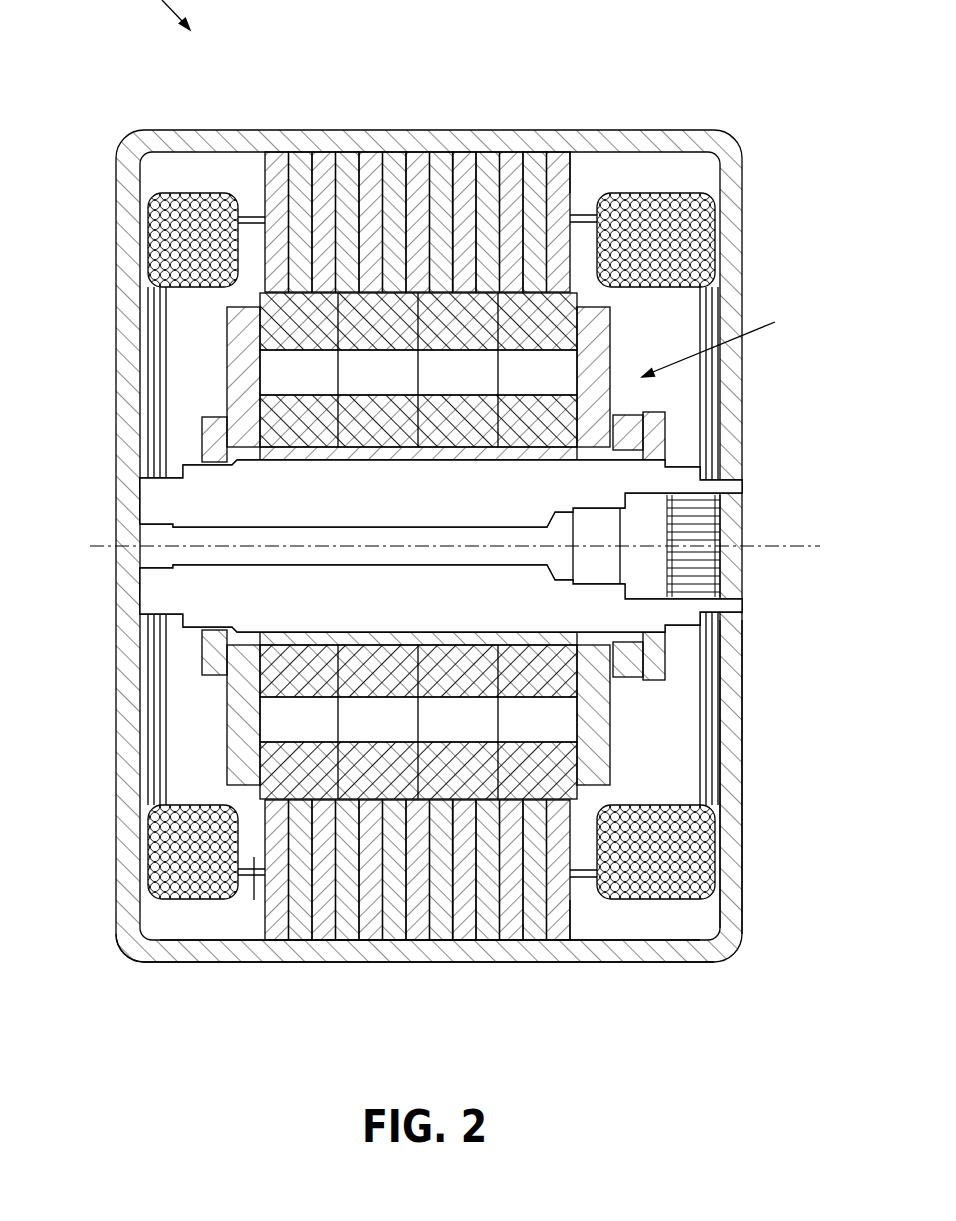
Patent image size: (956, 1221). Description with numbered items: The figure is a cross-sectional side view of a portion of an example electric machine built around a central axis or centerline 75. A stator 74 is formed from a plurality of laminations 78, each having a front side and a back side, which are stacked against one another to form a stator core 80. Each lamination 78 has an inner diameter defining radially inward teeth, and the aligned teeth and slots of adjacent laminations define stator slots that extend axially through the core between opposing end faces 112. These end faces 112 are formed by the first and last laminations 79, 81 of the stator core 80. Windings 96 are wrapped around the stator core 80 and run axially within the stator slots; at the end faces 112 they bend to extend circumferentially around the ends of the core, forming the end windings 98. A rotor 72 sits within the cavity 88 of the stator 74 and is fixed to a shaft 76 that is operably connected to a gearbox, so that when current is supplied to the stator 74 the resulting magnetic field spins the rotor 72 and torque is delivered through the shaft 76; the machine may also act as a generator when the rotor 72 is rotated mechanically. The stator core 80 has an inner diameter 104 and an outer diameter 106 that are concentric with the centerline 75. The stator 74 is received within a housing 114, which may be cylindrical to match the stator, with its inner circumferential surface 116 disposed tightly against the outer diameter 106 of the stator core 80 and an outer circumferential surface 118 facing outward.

The rotor 72 is at (537, 318).
The stator 74 is at (352, 150).
The centerline 75 is at (782, 545).
The shaft 76 is at (730, 480).
The laminations 78 is at (560, 150).
The first lamination 79 is at (572, 174).
The stator core 80 is at (442, 178).
The last lamination 81 is at (265, 178).
The cavity 88 is at (710, 332).
The windings 96 is at (254, 900).
The end windings 98 is at (718, 200).
The inner diameter 104 is at (295, 452).
The outer diameter 106 is at (393, 150).
The end faces 112 is at (250, 160).
The housing 114 is at (432, 960).
The inner circumferential surface 116 is at (612, 932).
The outer circumferential surface 118 is at (150, 963).